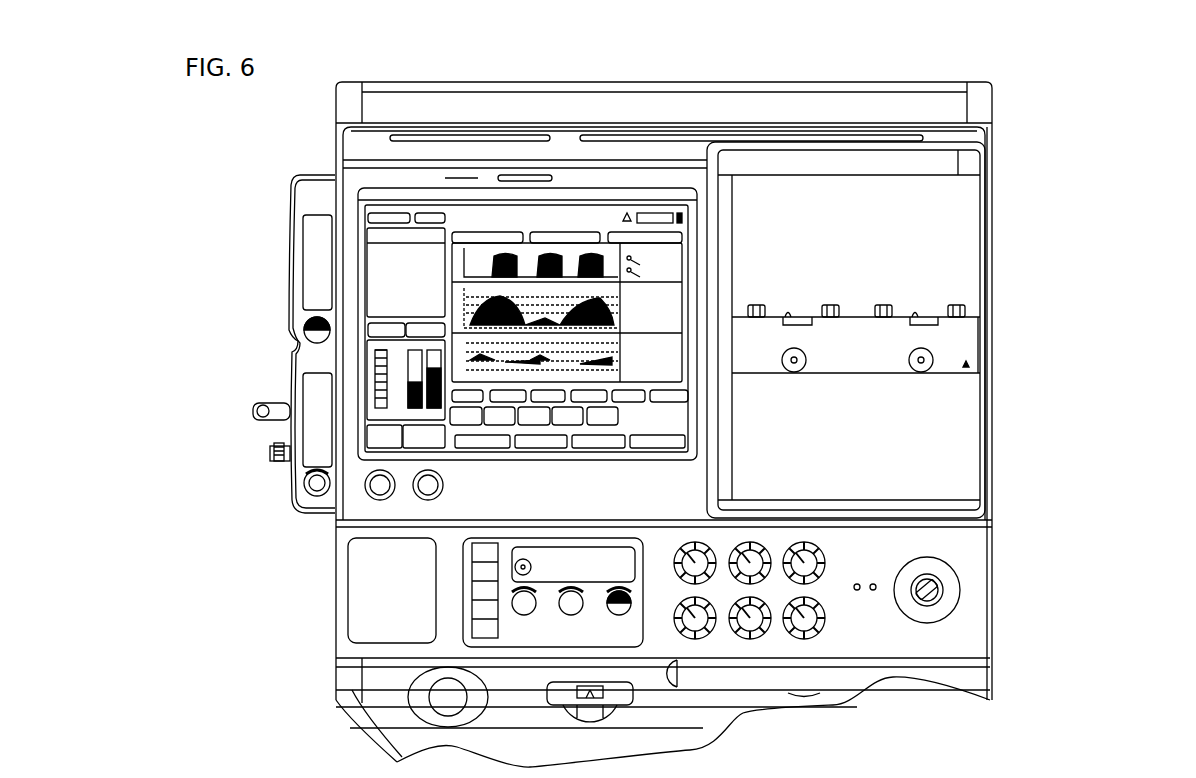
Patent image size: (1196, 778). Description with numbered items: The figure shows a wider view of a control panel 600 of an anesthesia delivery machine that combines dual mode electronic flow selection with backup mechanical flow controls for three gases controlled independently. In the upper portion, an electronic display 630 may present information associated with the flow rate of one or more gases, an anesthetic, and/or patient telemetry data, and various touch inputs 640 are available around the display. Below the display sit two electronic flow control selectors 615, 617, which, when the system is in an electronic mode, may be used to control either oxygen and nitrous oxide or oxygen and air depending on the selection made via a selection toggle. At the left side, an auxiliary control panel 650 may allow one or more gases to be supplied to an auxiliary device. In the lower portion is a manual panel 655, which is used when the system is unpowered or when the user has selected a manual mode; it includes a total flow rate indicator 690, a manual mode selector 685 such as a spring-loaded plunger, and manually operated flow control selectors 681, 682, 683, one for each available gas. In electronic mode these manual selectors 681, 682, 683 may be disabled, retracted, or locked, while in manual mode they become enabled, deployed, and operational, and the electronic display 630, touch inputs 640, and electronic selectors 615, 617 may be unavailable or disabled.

The control panel 600 is at (1107, 69).
The electronic flow control selector 615 is at (388, 498).
The electronic flow control selector 617 is at (432, 498).
The electronic display 630 is at (532, 252).
The touch inputs 640 is at (529, 460).
The auxiliary control panel 650 is at (312, 513).
The manual panel 655 is at (456, 571).
The manually operated flow control selector 681 is at (522, 616).
The manually operated flow control selector 682 is at (569, 616).
The manually operated flow control selector 683 is at (615, 614).
The manual mode selector 685 is at (533, 567).
The total flow rate indicator 690 is at (472, 612).